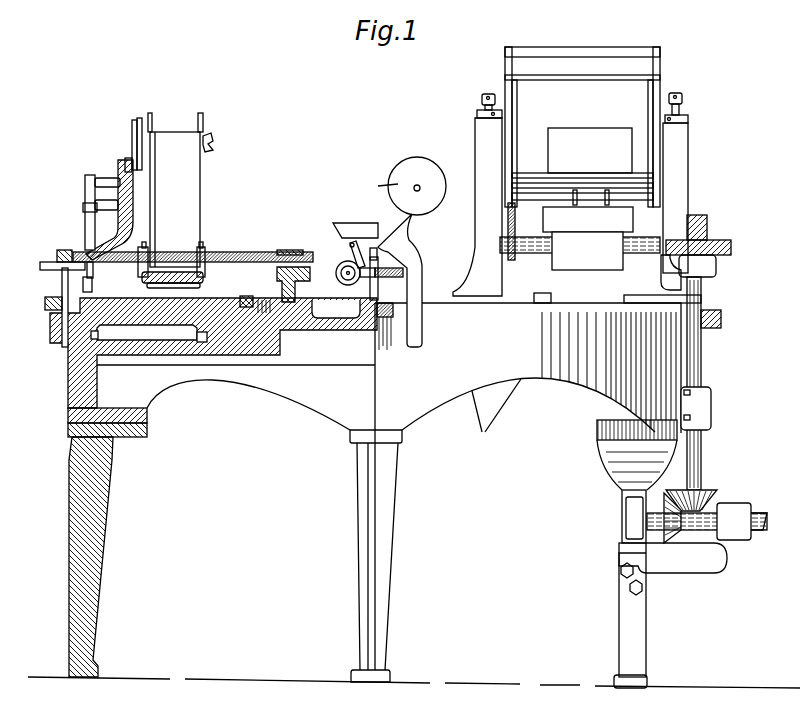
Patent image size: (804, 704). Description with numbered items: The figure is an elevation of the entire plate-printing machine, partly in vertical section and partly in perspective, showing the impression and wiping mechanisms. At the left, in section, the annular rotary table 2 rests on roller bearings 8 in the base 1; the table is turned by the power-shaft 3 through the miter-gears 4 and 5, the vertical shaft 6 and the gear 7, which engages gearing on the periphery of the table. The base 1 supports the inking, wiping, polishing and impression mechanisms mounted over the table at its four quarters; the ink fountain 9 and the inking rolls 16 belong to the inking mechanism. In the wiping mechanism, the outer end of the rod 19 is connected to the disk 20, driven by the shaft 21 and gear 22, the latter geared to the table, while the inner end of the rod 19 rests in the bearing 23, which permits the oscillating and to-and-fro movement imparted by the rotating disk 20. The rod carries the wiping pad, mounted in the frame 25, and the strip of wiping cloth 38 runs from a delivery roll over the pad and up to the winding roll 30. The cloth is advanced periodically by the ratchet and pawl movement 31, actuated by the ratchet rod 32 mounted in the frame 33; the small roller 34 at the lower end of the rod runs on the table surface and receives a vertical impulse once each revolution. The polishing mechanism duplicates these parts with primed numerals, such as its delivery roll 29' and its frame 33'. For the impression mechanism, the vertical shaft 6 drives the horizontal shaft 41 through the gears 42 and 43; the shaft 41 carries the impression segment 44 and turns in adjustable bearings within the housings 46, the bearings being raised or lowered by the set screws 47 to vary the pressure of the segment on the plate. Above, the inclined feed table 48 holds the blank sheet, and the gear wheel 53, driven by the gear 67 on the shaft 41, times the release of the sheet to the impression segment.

The base 1 is at (310, 393).
The annular rotary table 2 is at (68, 352).
The power-shaft 3 is at (764, 530).
The miter-gear 4 is at (674, 537).
The miter-gear 5 is at (707, 492).
The vertical shaft 6 is at (701, 453).
The gear 7 is at (717, 328).
The roller bearings 8 is at (83, 355).
The fountain 9 is at (355, 224).
The inking rolls 16 is at (343, 280).
The rod 19 is at (240, 254).
The disk 20 is at (40, 262).
The shaft 21 is at (60, 282).
The gear 22 is at (45, 305).
The bearing 23 is at (285, 252).
The frame 25 is at (208, 268).
The delivery roll 29' is at (414, 171).
The winding roll 30 is at (203, 125).
The ratchet and pawl movement 31 is at (85, 178).
The ratchet rod 32 is at (85, 227).
The frame 33 is at (109, 210).
The frame 33' is at (409, 267).
The small roller 34 is at (92, 292).
The strip of wiping cloth 38 is at (193, 195).
The horizontal shaft 41 is at (545, 253).
The gear 42 is at (731, 248).
The gear 43 is at (707, 223).
The impression segment 44 is at (601, 260).
The housings 46 is at (480, 147).
The set screws 47 is at (482, 99).
The inclined feed table 48 is at (590, 137).
The gear wheel 53 is at (512, 220).
The gear 67 is at (511, 260).